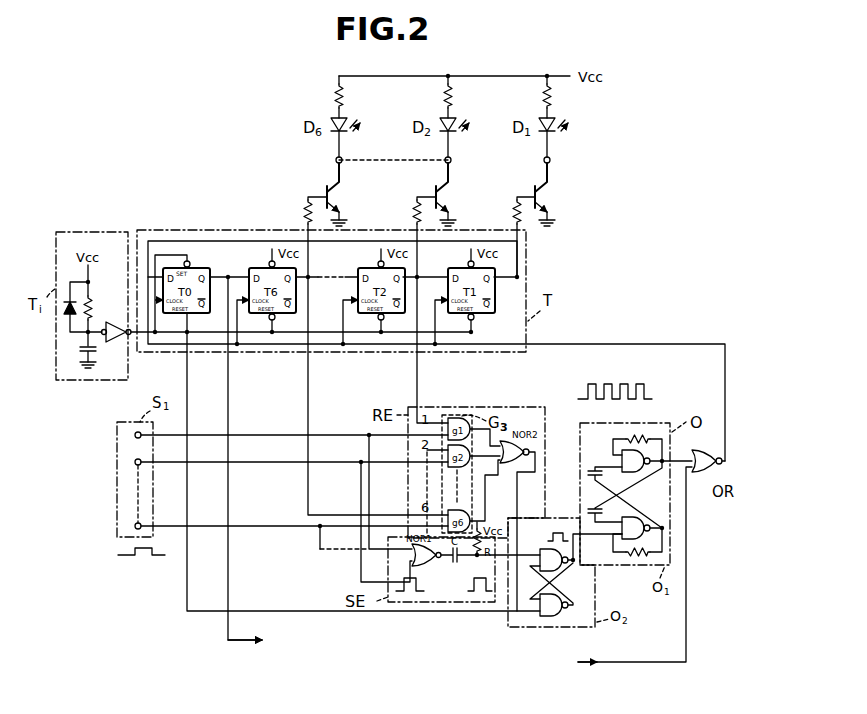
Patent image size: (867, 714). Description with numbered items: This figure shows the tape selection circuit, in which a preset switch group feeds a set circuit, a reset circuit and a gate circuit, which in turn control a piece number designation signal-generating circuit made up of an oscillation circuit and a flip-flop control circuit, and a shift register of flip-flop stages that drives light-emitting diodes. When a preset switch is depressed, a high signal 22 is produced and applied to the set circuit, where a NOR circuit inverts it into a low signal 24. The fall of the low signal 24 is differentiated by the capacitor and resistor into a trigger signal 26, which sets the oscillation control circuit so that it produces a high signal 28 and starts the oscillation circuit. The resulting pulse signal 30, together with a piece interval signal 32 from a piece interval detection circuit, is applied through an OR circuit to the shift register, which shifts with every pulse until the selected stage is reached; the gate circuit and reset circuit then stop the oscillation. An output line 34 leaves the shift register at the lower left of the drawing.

The high signal 22 is at (128, 558).
The low signal 24 is at (400, 592).
The trigger signal 26 is at (472, 592).
The high signal 28 is at (546, 536).
The pulse signal 30 is at (578, 399).
The piece interval signal 32 is at (612, 668).
The output signal line 34 is at (232, 645).